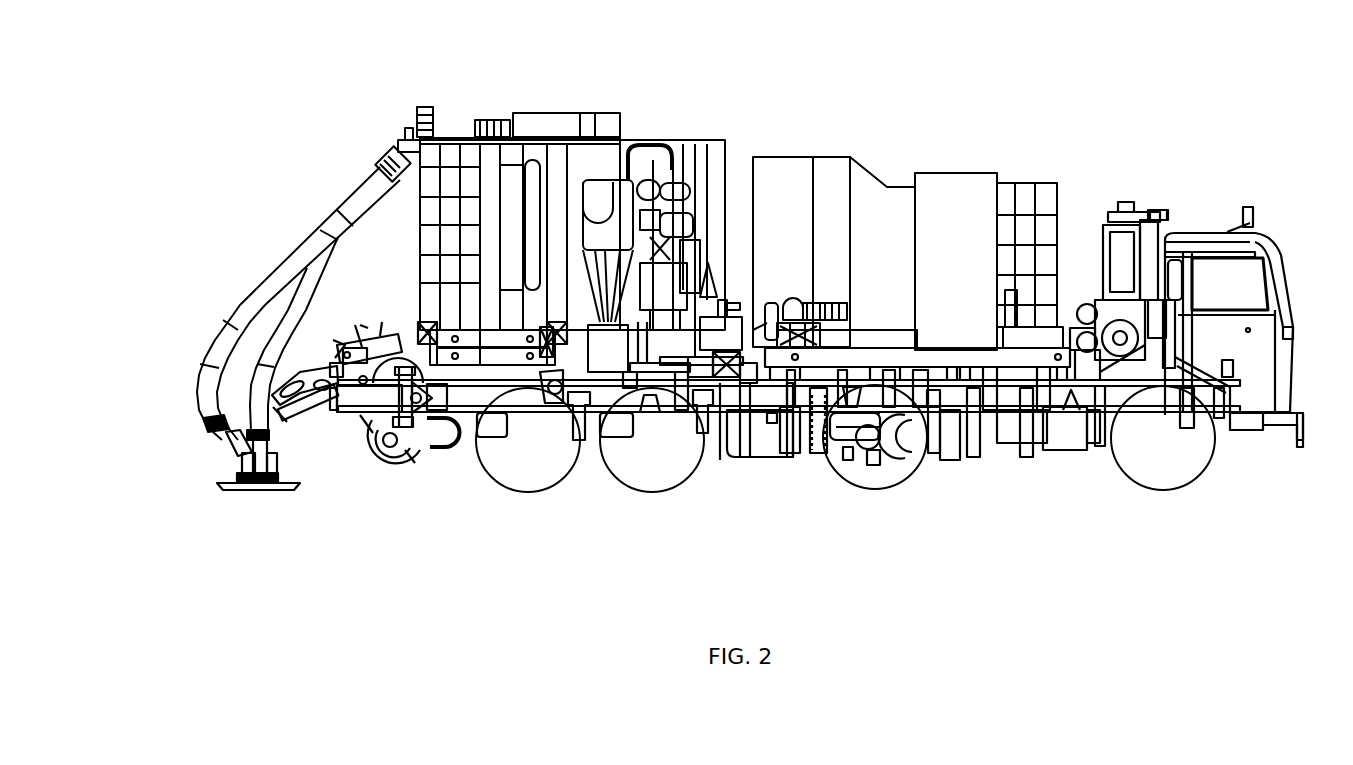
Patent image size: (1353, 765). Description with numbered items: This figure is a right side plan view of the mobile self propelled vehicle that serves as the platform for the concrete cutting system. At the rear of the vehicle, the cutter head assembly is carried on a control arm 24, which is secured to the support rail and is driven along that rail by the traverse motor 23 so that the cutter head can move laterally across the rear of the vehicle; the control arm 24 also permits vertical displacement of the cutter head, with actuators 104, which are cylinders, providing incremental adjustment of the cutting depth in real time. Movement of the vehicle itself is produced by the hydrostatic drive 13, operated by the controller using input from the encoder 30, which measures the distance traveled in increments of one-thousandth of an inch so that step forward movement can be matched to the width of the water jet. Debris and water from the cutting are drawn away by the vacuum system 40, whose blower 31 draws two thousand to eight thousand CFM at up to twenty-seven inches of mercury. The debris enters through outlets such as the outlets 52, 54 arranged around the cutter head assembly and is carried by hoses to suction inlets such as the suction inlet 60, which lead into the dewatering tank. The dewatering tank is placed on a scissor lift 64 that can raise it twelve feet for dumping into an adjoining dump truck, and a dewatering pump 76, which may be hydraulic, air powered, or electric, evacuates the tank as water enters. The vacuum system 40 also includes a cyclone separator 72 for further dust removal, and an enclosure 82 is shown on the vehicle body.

The hydrostatic drive 13 is at (812, 447).
The traverse motor 23 is at (400, 365).
The control arm 24 is at (396, 330).
The encoder 30 is at (558, 392).
The blower 31 is at (686, 403).
The vacuum system 40 is at (705, 142).
The outlet 52 is at (262, 461).
The outlet 54 is at (243, 450).
The suction inlet 60 is at (400, 148).
The scissor lift 64 is at (490, 360).
The cyclone separator 72 is at (620, 238).
The dewatering pump 76 is at (812, 305).
The enclosure 82 is at (790, 157).
The actuators 104 is at (313, 402).